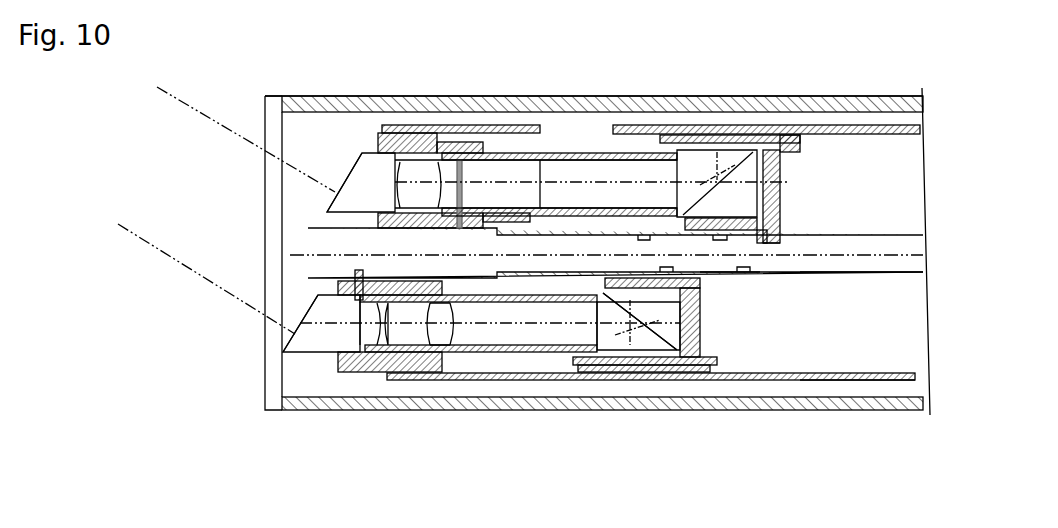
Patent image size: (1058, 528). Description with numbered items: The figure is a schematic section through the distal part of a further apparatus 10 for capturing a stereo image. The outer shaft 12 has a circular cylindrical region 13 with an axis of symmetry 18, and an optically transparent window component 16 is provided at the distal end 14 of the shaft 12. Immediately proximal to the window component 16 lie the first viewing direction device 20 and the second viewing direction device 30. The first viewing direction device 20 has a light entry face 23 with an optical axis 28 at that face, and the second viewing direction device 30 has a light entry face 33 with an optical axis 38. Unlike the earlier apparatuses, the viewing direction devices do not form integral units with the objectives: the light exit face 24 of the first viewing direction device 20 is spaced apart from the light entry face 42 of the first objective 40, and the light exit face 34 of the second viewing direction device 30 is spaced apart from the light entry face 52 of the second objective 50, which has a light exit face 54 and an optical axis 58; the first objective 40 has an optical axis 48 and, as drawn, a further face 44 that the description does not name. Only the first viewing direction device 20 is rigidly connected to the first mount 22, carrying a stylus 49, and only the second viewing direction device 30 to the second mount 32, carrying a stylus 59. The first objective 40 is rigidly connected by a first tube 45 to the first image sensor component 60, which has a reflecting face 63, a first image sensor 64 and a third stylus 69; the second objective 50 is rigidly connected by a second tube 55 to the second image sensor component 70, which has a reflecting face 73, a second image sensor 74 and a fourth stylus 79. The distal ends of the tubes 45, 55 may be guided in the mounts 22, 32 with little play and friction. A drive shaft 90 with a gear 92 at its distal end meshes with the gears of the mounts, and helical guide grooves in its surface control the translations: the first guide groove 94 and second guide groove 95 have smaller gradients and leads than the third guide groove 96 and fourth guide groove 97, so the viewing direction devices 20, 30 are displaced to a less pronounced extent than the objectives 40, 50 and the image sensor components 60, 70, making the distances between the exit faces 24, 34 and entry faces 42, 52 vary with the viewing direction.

The apparatus 10 is at (256, 78).
The distal end 14 is at (597, 251).
The outer shaft 12 is at (912, 96).
The circular cylindrical region 13 is at (895, 410).
The axis of symmetry 18 is at (250, 252).
The optical axis 38 is at (188, 104).
The optical axis 28 is at (196, 268).
The second viewing direction device 30 is at (352, 172).
The light entry face 33 is at (328, 199).
The second mount 32 is at (383, 152).
The light exit face 34 is at (397, 173).
The light entry face 52 is at (405, 175).
The stylus 59 is at (440, 175).
The second objective 50 is at (461, 165).
The light exit face 54 is at (532, 165).
The second guide groove 95 is at (552, 152).
The optical axis 58 is at (600, 183).
The second tube 55 is at (635, 152).
The second image sensor 74 is at (718, 143).
The reflecting face 73 is at (763, 188).
The fourth stylus 79 is at (766, 232).
The second image sensor component 70 is at (782, 195).
The fourth guide groove 97 is at (783, 237).
The optically transparent window component 16 is at (268, 338).
The first guide groove 94 is at (348, 276).
The light entry face 23 is at (285, 350).
The first viewing direction device 20 is at (298, 338).
The stylus 49 is at (342, 298).
The first mount 22 is at (346, 372).
The light entry face 42 is at (360, 350).
The light exit face 24 is at (380, 348).
The first objective 40 is at (441, 348).
The objective tube 44 is at (454, 348).
The gear 92 is at (505, 302).
The optical axis 48 is at (552, 325).
The first tube 45 is at (563, 356).
The third stylus 69 is at (624, 300).
The first image sensor 64 is at (648, 332).
The reflecting face 63 is at (700, 322).
The first image sensor component 60 is at (708, 270).
The third guide groove 96 is at (812, 381).
The drive shaft 90 is at (848, 273).